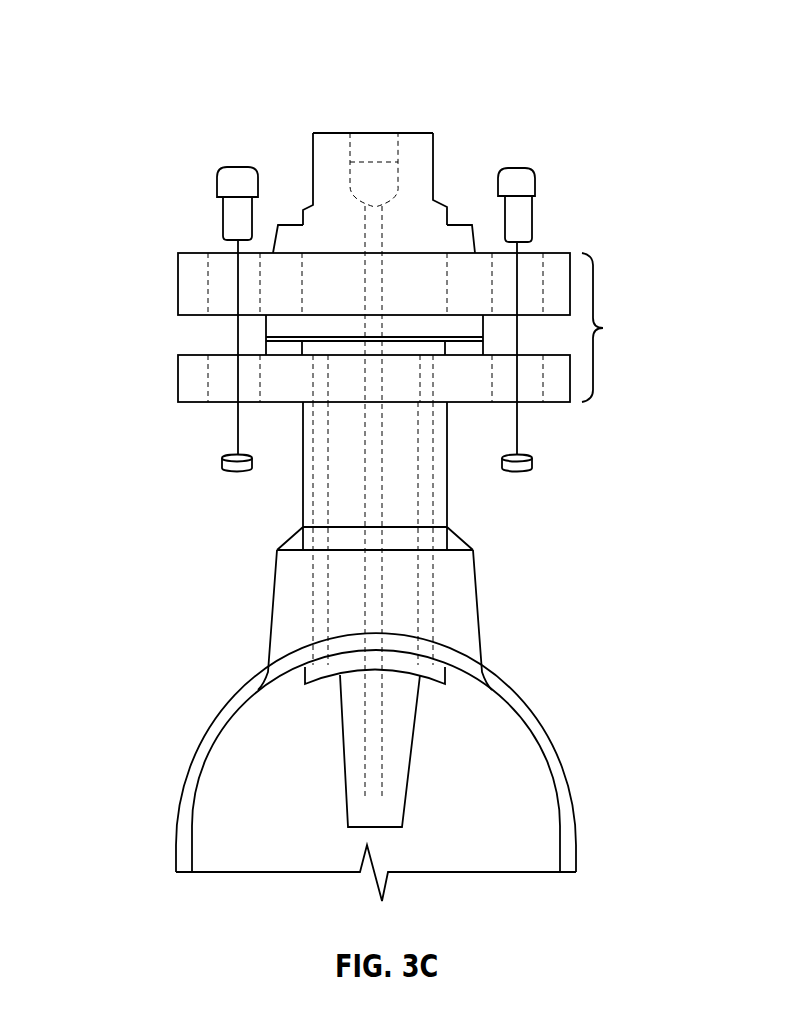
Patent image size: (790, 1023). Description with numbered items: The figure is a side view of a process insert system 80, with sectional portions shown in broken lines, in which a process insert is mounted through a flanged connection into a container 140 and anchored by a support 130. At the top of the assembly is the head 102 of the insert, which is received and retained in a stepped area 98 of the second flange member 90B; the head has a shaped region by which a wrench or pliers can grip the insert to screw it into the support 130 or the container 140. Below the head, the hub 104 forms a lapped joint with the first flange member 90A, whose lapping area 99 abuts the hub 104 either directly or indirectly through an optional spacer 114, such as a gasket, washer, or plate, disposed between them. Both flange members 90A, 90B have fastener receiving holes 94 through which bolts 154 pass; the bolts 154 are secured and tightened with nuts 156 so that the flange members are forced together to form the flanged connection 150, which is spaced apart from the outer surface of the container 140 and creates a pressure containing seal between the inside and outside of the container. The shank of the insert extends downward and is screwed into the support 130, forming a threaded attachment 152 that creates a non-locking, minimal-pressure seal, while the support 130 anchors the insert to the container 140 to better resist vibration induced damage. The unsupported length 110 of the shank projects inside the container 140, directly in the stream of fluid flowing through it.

The process insert system 80 is at (152, 77).
The head 102 is at (428, 160).
The stepped area 98 is at (472, 247).
The bolts 154 is at (229, 181).
The fastener receiving holes 94 is at (216, 268).
The second flange member 90B is at (174, 285).
The first flange member 90A is at (174, 379).
The hub 104 is at (474, 326).
The spacer 114 is at (262, 338).
The lapping area 99 is at (481, 349).
The flanged connection 150 is at (612, 327).
The nuts 156 is at (240, 474).
The support 130 is at (266, 632).
The threaded attachment 152 is at (432, 632).
The container 140 is at (221, 742).
The unsupported length 110 is at (407, 757).